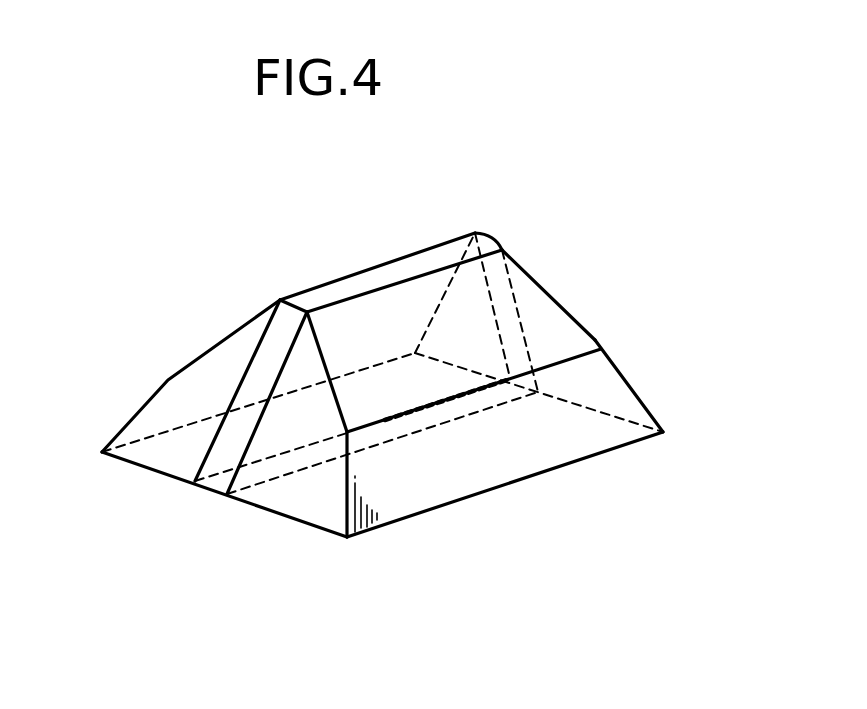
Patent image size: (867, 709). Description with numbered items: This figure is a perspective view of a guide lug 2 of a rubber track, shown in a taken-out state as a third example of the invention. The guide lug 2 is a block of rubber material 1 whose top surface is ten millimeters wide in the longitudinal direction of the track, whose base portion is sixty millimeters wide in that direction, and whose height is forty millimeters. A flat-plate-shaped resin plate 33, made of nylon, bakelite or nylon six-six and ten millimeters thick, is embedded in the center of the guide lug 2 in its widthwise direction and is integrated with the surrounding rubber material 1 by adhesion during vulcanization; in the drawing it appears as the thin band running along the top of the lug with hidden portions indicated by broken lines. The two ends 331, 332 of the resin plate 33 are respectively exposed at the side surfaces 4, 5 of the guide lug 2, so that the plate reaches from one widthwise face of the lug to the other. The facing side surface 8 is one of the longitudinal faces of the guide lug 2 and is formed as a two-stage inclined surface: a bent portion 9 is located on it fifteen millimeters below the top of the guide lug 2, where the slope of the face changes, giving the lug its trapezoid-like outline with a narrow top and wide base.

The rubber material 1 is at (552, 545).
The guide lug 2 is at (527, 246).
The side surface 4 is at (158, 410).
The side surface 5 is at (610, 386).
The side surface 8 is at (595, 428).
The bent portion 9 is at (583, 352).
The resin plate 33 is at (330, 292).
The end of the resin plate 331 is at (250, 383).
The end of the resin plate 332 is at (527, 335).